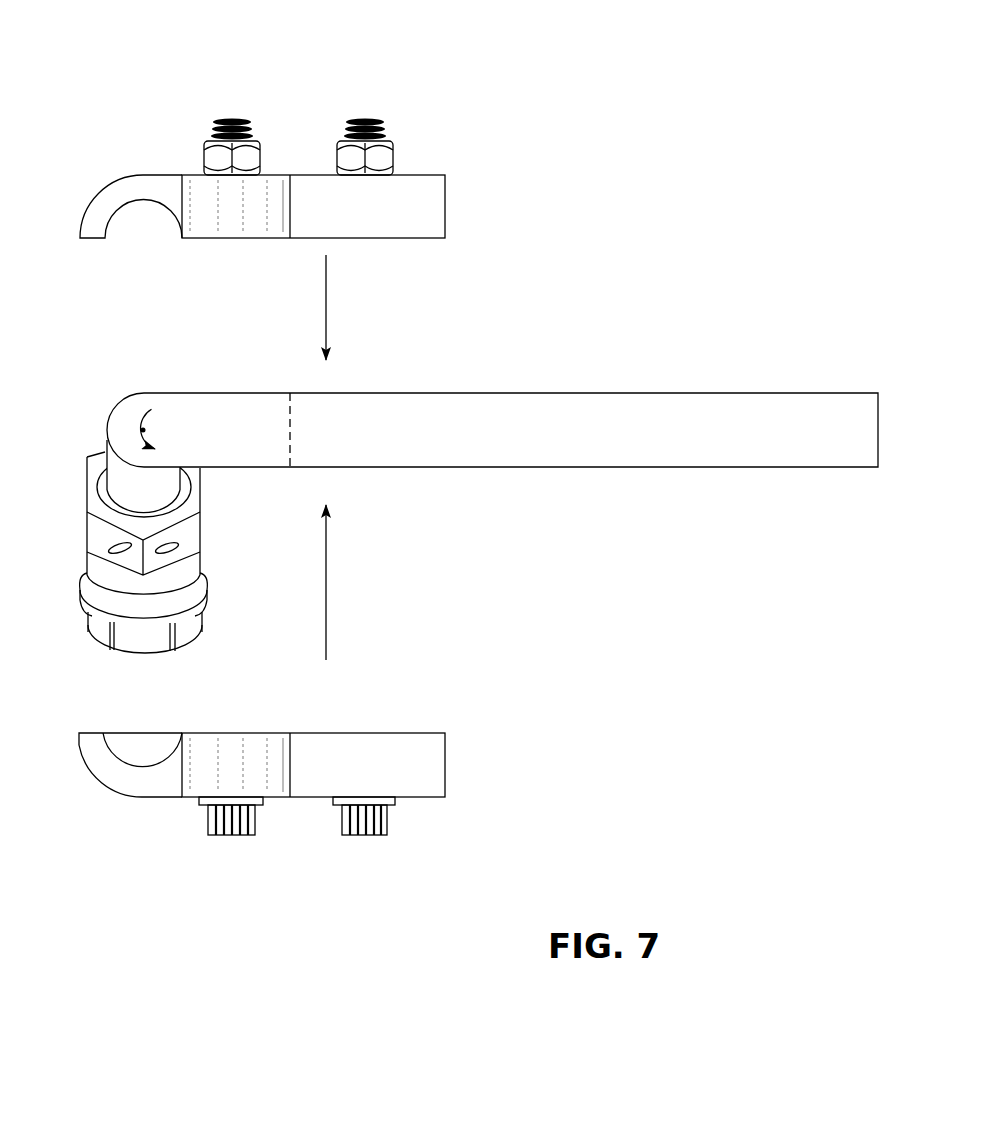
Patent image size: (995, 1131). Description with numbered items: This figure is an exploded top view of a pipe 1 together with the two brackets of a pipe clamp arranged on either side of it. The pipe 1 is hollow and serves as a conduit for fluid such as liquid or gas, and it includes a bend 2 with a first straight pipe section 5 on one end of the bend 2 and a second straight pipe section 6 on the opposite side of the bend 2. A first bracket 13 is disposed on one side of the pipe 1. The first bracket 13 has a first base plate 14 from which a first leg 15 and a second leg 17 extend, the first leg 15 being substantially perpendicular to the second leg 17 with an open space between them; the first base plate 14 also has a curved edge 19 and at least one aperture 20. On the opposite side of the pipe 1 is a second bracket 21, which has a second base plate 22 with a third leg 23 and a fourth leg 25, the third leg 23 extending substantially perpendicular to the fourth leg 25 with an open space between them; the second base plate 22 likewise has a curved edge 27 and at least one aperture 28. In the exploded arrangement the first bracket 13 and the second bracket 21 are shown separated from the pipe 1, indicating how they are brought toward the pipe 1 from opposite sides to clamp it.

The pipe 1 is at (644, 295).
The bend 2 is at (297, 425).
The first straight pipe section 5 is at (721, 381).
The second straight pipe section 6 is at (209, 558).
The first bracket 13 is at (264, 170).
The first base plate 14 is at (212, 212).
The first leg 15 is at (420, 168).
The second leg 17 is at (156, 168).
The curved edge 19 is at (249, 244).
The aperture 20 is at (334, 124).
The second bracket 21 is at (247, 792).
The second base plate 22 is at (230, 763).
The third leg 23 is at (317, 802).
The fourth leg 25 is at (126, 810).
The curved edge 27 is at (233, 730).
The aperture 28 is at (351, 842).